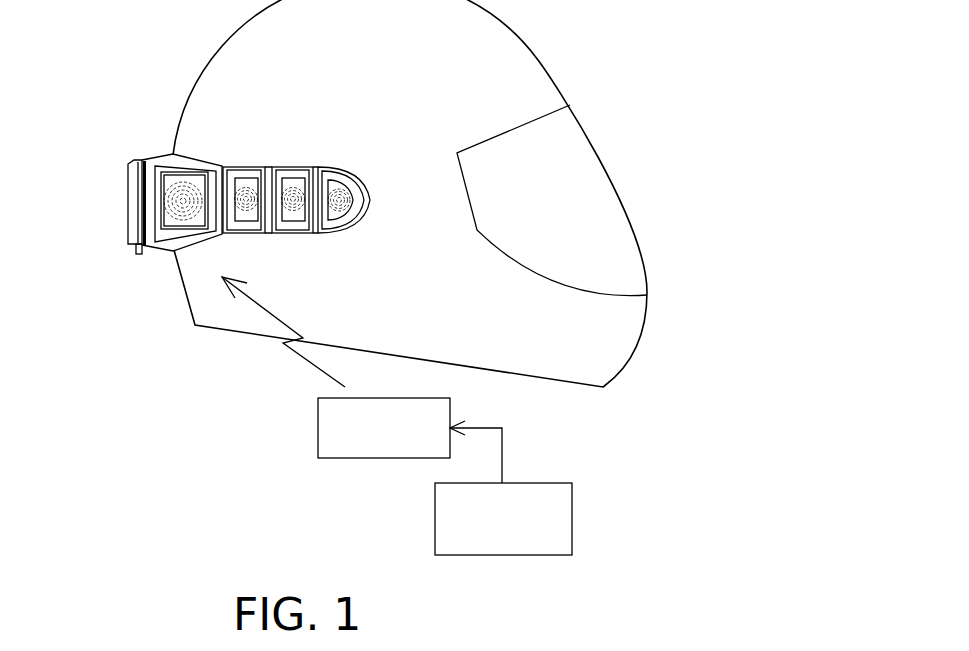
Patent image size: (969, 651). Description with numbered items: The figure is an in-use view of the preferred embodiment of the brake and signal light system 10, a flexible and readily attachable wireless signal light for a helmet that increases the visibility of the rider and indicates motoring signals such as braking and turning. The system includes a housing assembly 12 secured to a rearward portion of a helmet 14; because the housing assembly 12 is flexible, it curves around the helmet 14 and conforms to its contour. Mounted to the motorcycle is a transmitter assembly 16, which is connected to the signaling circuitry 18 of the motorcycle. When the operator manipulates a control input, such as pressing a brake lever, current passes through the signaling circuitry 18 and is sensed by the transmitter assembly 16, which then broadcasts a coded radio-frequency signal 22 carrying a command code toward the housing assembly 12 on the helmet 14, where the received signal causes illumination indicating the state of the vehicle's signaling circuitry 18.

The brake and signal light system 10 is at (227, 460).
The housing assembly 12 is at (160, 272).
The helmet 14 is at (543, 92).
The transmitter assembly 16 is at (333, 449).
The signaling circuitry 18 is at (443, 522).
The radio-frequency signal 22 is at (263, 312).